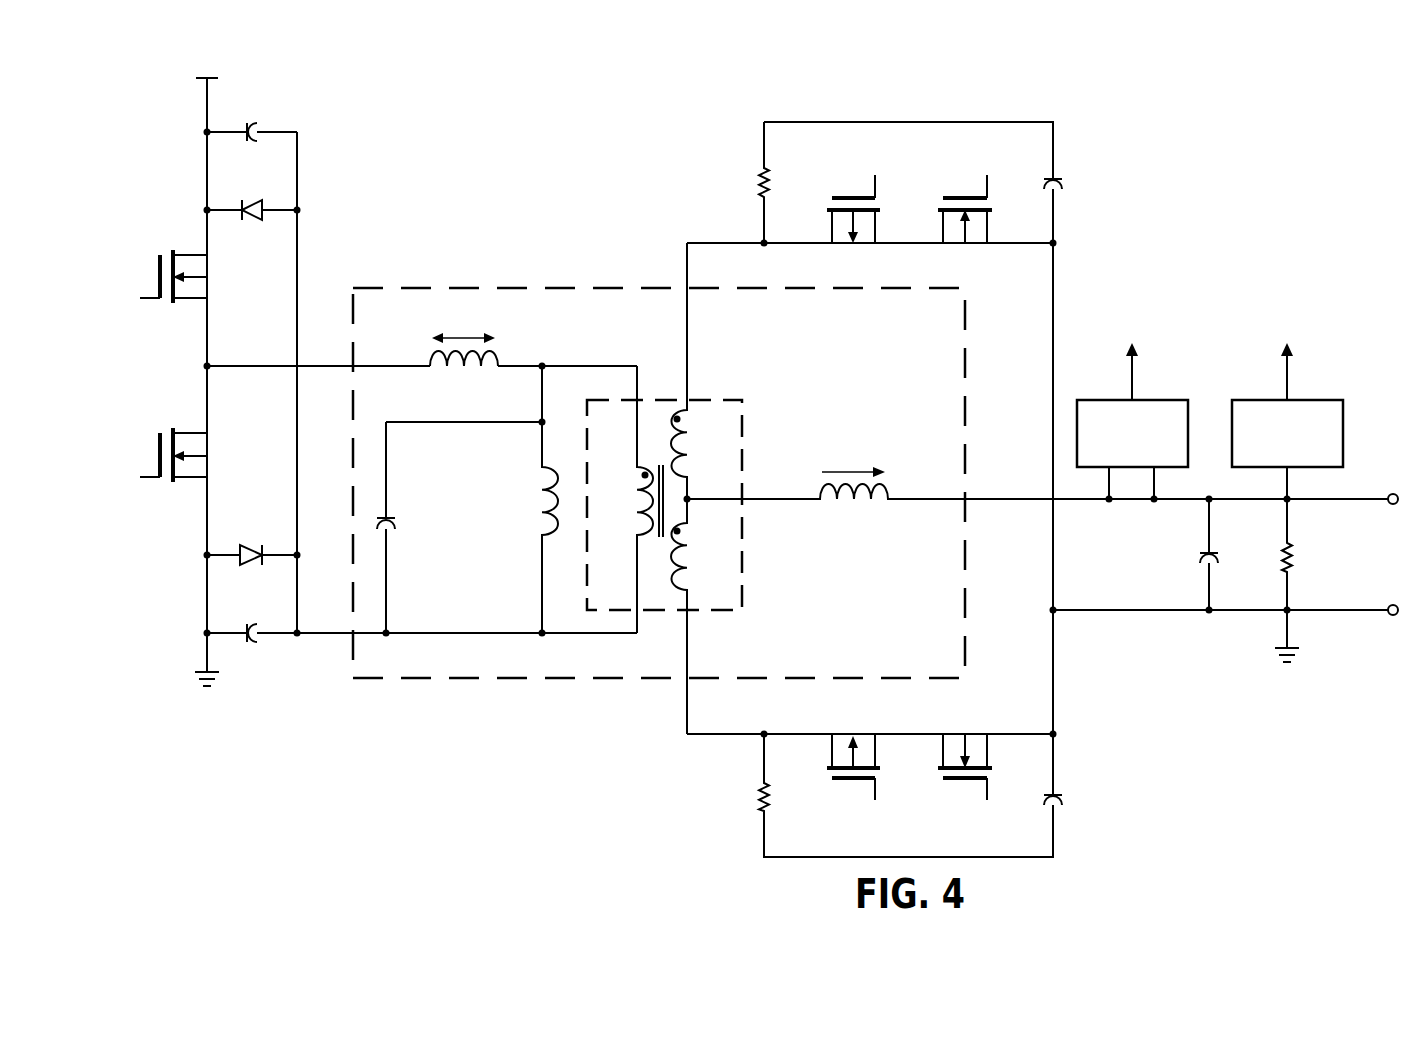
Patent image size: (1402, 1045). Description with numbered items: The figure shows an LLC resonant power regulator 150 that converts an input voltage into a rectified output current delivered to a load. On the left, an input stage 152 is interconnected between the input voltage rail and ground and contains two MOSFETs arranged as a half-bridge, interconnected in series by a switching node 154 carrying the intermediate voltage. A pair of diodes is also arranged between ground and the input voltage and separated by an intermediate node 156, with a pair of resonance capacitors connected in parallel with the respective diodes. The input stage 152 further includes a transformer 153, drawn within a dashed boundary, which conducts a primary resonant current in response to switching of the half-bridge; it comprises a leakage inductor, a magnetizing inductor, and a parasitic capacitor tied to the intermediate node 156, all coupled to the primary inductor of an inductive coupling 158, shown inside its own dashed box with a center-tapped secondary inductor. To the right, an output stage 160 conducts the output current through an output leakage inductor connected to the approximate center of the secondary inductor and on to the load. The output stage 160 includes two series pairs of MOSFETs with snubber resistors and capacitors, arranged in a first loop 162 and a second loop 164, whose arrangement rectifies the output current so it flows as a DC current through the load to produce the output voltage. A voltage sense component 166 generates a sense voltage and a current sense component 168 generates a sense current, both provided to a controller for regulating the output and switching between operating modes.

The LLC resonant power regulator 150 is at (132, 127).
The input stage 152 is at (417, 182).
The transformer 153 is at (522, 277).
The switching node 154 is at (165, 375).
The intermediate node 156 is at (277, 668).
The inductive coupling 158 is at (709, 383).
The output stage 160 is at (1122, 147).
The first loop 162 is at (697, 150).
The second loop 164 is at (694, 856).
The voltage sense component 166 is at (1165, 398).
The current sense component 168 is at (1320, 398).